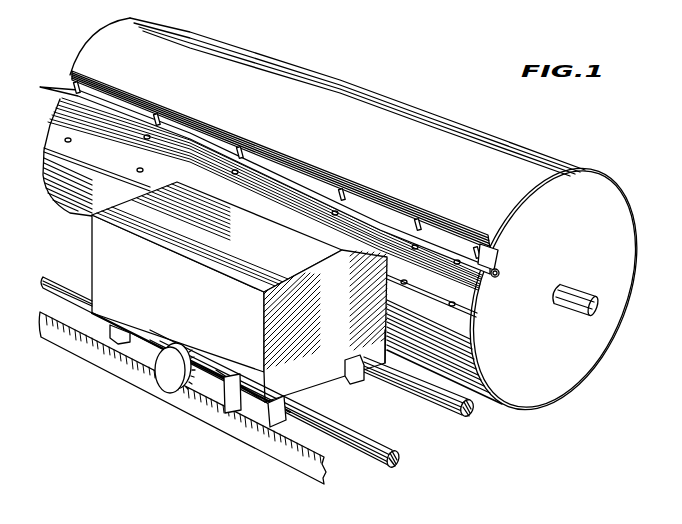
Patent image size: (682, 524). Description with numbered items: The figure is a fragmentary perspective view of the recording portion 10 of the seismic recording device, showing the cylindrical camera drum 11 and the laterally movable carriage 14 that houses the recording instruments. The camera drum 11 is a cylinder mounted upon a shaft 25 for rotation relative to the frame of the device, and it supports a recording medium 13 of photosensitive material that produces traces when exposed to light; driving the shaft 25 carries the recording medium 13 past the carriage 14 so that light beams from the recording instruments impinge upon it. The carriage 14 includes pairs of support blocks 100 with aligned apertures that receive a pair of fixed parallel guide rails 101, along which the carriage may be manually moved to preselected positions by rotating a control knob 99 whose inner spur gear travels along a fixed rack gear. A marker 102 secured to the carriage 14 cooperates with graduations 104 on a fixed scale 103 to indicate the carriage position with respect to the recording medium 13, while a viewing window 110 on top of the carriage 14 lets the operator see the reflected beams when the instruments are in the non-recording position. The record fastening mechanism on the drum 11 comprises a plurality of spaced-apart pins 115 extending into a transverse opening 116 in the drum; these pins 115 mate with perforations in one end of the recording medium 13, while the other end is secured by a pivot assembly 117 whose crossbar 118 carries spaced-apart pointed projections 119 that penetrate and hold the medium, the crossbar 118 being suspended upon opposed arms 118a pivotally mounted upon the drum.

The recording portion of the apparatus 10 is at (439, 99).
The camera drum 11 is at (604, 199).
The recording medium 13 is at (537, 159).
The carriage 14 is at (239, 292).
The shaft 25 is at (576, 290).
The control knob 99 is at (171, 378).
The support blocks 100 is at (360, 383).
The guide rails 101 is at (408, 452).
The marker 102 is at (222, 410).
The scale 103 is at (182, 399).
The graduations 104 is at (253, 430).
The viewing window 110 is at (209, 195).
The pins 115 is at (75, 83).
The transverse opening 116 is at (121, 108).
The pivot assembly 117 is at (546, 250).
The crossbar 118 is at (260, 173).
The opposed arms 118a is at (538, 305).
The pointed projections 119 is at (80, 100).